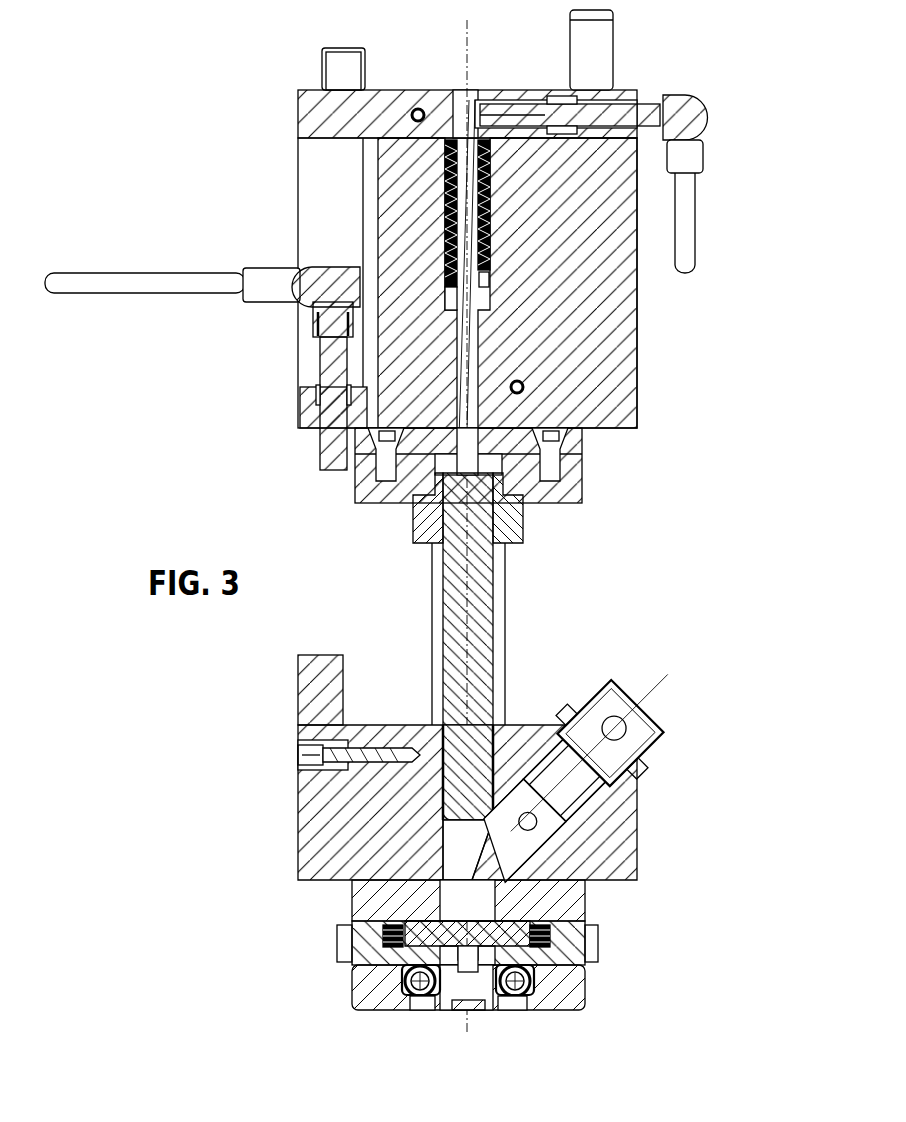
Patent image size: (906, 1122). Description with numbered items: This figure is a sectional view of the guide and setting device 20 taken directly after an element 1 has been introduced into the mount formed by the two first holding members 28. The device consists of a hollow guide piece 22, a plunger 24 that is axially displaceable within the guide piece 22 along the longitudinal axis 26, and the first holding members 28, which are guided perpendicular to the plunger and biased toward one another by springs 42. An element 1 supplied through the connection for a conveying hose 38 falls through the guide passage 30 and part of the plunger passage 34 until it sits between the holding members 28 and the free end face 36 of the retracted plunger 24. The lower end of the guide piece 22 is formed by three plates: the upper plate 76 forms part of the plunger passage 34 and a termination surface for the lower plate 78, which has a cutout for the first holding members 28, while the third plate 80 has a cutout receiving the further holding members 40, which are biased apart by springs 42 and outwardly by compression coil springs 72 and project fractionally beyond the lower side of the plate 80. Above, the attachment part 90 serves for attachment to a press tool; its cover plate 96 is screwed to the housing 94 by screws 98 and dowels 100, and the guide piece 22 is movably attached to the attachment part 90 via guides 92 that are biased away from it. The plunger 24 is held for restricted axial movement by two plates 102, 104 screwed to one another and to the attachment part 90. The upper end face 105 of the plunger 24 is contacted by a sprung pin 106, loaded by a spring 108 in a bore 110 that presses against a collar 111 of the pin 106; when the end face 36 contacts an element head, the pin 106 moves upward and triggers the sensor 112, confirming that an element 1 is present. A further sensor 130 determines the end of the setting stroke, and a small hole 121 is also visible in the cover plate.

The element 1 is at (488, 922).
The guide and setting device 20 is at (533, 489).
The hollow guide piece 22 is at (305, 815).
The plunger 24 is at (482, 588).
The longitudinal axis 26 is at (468, 72).
The first holding members 28 is at (402, 968).
The guide passage 30 is at (537, 850).
The plunger passage 34 is at (440, 858).
The free end face 36 is at (437, 823).
The connection for a conveying hose 38 is at (660, 740).
The further holding members 40 is at (443, 1010).
The springs 42 is at (383, 935).
The compression coil spring 72 is at (417, 998).
The upper plate 76 is at (363, 905).
The lower plate 78 is at (340, 957).
The third plate 80 is at (352, 985).
The attachment part 90 is at (391, 241).
The guides 92 is at (507, 628).
The housing 94 is at (620, 392).
The cover plate 96 is at (305, 117).
The screws 98 is at (330, 70).
The dowels 100 is at (600, 50).
The plate 102 is at (580, 440).
The plate 104 is at (580, 500).
The upper end face 105 is at (433, 470).
The sprung pin 106 is at (473, 353).
The spring 108 is at (445, 178).
The bore 110 is at (490, 288).
The collar 111 is at (448, 300).
The sensor 112 is at (500, 113).
The vent hole 121 is at (418, 108).
The further sensor 130 is at (323, 457).